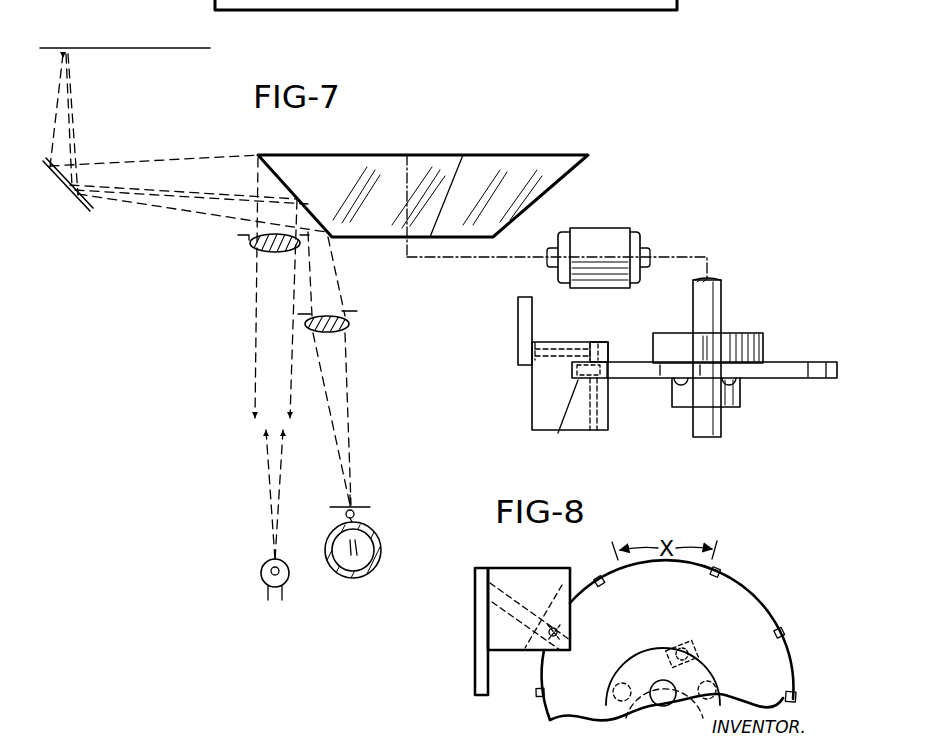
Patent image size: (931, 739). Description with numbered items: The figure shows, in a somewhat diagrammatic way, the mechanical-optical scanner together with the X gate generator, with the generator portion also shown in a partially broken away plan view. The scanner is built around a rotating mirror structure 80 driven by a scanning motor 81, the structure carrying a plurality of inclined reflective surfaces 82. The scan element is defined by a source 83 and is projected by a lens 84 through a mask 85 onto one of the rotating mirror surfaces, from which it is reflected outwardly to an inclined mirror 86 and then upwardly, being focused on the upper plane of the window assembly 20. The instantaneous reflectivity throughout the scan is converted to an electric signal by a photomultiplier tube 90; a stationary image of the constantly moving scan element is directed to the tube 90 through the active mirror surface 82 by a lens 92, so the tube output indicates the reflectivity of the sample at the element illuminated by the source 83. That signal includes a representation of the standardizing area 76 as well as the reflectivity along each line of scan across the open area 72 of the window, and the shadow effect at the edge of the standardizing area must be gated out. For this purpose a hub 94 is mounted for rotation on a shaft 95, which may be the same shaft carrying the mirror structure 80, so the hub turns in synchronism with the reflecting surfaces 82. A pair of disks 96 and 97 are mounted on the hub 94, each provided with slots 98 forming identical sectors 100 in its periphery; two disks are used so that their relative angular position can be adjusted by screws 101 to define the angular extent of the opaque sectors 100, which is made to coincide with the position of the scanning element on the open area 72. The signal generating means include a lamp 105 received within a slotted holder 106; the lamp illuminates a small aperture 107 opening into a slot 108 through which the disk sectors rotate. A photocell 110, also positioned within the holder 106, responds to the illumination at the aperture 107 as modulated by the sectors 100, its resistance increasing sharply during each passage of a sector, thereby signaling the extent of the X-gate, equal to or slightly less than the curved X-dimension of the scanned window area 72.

In FIG. 7, the window assembly 20 is at (118, 48).
In FIG. 7, the open area 72 is at (578, 0).
In FIG. 7, the standardizing area 76 is at (451, 0).
In FIG. 7, the rotating mirror structure 80 is at (441, 152).
In FIG. 7, the scanning motor 81 is at (615, 237).
In FIG. 7, the inclined reflective surfaces 82 is at (268, 172).
In FIG. 7, the source 83 is at (262, 578).
In FIG. 7, the lens 84 is at (268, 252).
In FIG. 7, the mask 85 is at (245, 238).
In FIG. 7, the inclined mirror 86 is at (76, 197).
In FIG. 7, the photomultiplier tube 90 is at (356, 578).
In FIG. 7, the lens 92 is at (336, 333).
In FIG. 7, the hub 94 is at (763, 348).
In FIG. 8, the hub 94 is at (648, 668).
In FIG. 7, the shaft 95 is at (708, 438).
In FIG. 7, the disk 96 is at (785, 379).
In FIG. 7, the disk 97 is at (796, 364).
In FIG. 8, the disk 97 is at (760, 666).
In FIG. 8, the slots 98 is at (738, 592).
In FIG. 8, the sectors 100 is at (783, 645).
In FIG. 8, the screws 101 is at (690, 650).
In FIG. 7, the lamp 105 is at (562, 345).
In FIG. 8, the lamp 105 is at (513, 597).
In FIG. 7, the slotted holder 106 is at (520, 410).
In FIG. 8, the slotted holder 106 is at (502, 578).
In FIG. 7, the aperture 107 is at (596, 344).
In FIG. 8, the aperture 107 is at (553, 638).
In FIG. 7, the slot 108 is at (559, 420).
In FIG. 7, the photocell 110 is at (596, 394).